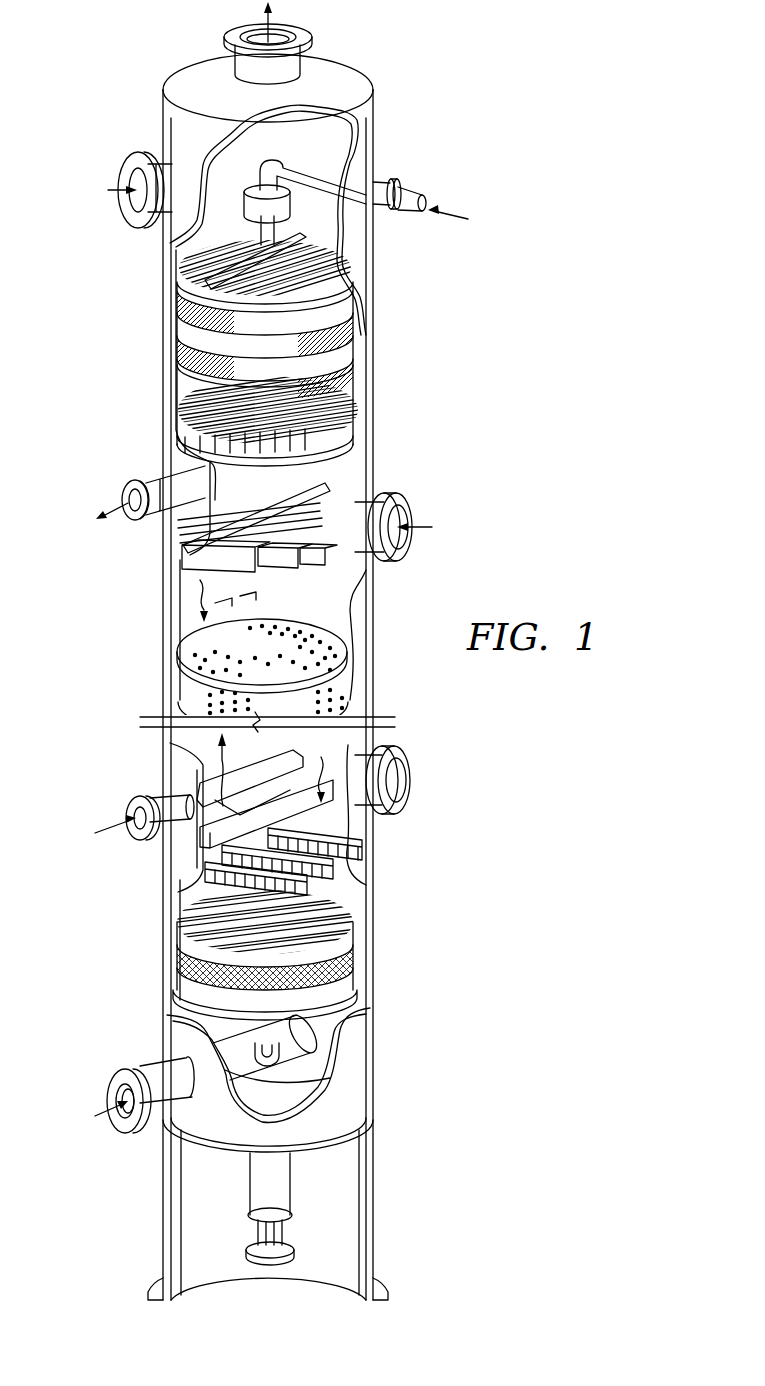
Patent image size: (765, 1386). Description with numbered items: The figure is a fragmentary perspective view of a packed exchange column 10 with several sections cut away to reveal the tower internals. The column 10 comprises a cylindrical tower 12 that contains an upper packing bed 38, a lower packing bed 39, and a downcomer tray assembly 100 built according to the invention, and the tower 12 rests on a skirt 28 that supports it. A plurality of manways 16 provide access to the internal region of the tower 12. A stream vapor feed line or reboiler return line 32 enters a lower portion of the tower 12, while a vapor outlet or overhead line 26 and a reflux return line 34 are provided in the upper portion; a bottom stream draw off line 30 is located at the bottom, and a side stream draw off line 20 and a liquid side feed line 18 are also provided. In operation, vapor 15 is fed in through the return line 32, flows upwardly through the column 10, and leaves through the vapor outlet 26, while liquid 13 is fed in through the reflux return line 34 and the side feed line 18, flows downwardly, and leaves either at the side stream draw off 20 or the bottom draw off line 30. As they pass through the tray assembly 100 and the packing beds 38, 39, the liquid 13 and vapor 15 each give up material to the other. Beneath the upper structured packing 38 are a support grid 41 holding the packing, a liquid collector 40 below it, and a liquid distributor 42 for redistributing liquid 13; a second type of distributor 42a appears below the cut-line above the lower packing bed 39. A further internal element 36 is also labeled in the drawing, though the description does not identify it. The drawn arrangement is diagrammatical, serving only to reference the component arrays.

The exchange column 10 is at (392, 58).
The cylindrical tower 12 is at (375, 112).
The liquid 13 is at (466, 218).
The vapor 15 is at (276, 18).
The manways 16 is at (128, 163).
The liquid side feed line 18 is at (134, 802).
The side stream draw off line 20 is at (162, 478).
The vapor outlet or overhead line 26 is at (315, 40).
The skirt 28 is at (367, 1230).
The bottom stream draw off line 30 is at (283, 1180).
The stream vapor feed line or reboiler return line 32 is at (148, 1070).
The reflux return line 34 is at (378, 184).
The liquid distributor 36 is at (178, 265).
The upper packing bed 38 is at (135, 320).
The lower packing bed 39 is at (140, 965).
The liquid collector 40 is at (360, 414).
The support grid 41 is at (368, 368).
The liquid distributor 42 is at (184, 550).
The second type of distributor 42a is at (358, 852).
The downcomer tray assembly 100 is at (140, 692).